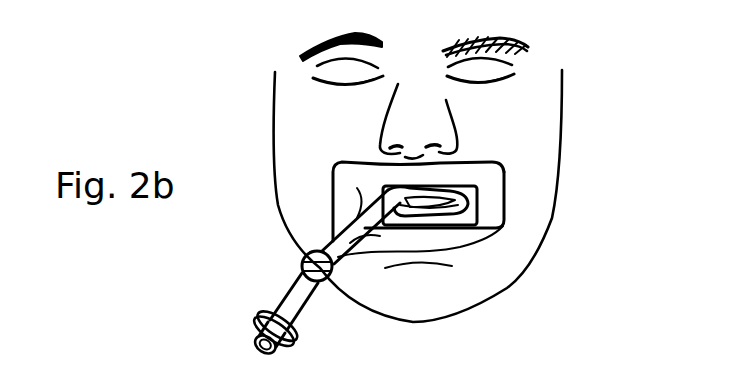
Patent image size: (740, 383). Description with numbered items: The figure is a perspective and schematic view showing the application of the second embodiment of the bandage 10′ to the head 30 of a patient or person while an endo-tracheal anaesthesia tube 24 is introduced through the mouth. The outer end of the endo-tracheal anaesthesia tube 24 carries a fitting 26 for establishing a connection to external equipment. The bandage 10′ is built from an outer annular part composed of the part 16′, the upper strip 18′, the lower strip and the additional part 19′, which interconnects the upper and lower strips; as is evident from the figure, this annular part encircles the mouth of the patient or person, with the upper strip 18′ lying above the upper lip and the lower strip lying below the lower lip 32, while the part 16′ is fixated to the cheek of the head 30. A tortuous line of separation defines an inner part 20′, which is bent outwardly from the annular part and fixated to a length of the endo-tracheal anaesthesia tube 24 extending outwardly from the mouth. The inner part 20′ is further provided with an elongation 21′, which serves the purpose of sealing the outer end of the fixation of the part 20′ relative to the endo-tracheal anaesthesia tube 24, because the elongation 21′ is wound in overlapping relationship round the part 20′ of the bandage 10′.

The head of the patient or person 30 is at (538, 47).
The bandage (second embodiment) 10′ is at (421, 196).
The upper strip 18′ is at (480, 163).
The additional part 19′ is at (480, 205).
The lower lip 32 is at (474, 220).
The inner part 20′ is at (455, 240).
The part 16′ is at (340, 199).
The elongation 21′ is at (334, 266).
The endo-tracheal anaesthesia tube 24 is at (283, 290).
The fitting 26 is at (257, 345).